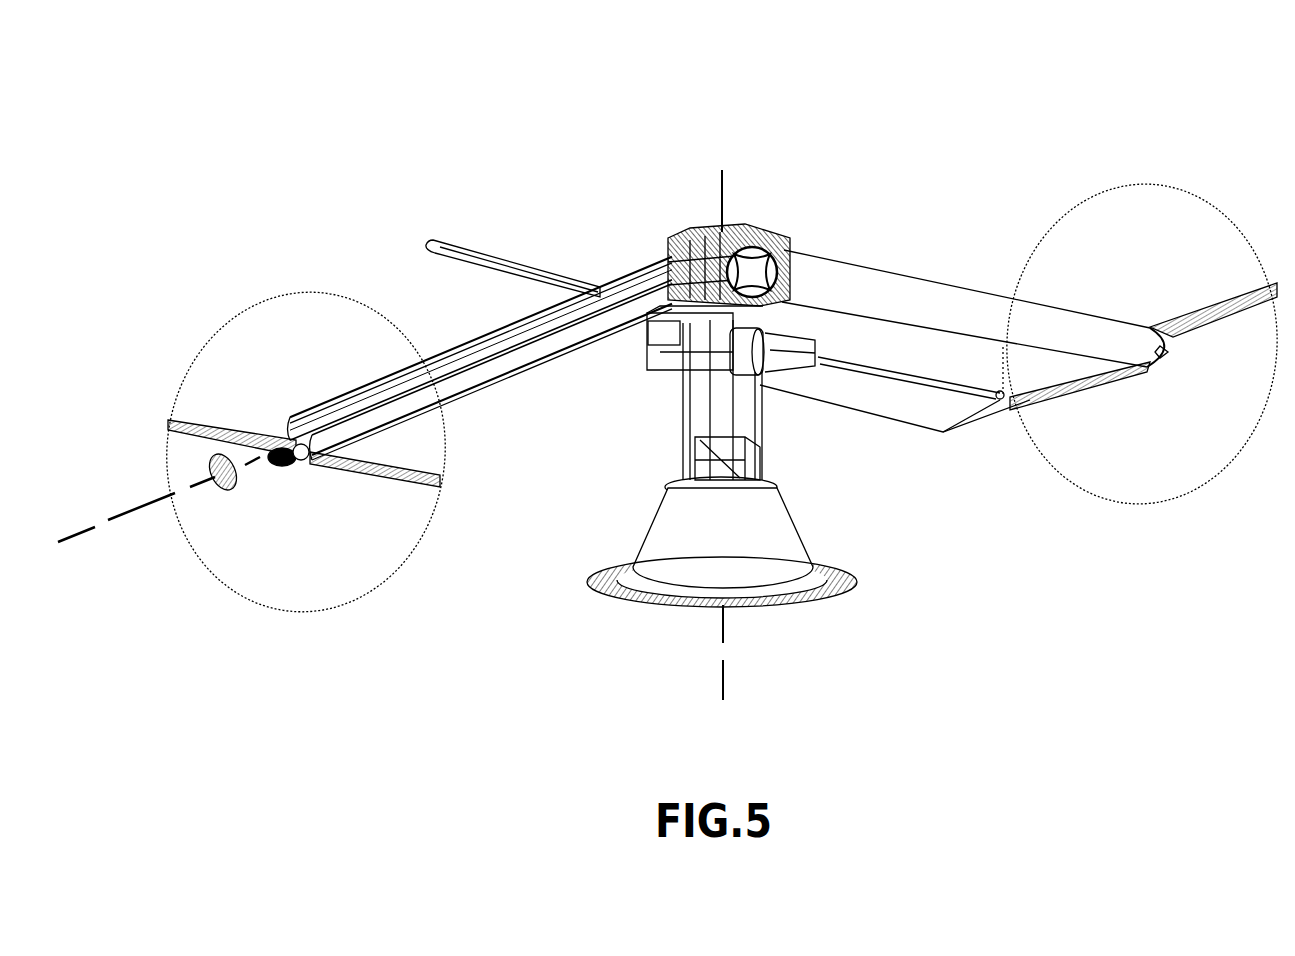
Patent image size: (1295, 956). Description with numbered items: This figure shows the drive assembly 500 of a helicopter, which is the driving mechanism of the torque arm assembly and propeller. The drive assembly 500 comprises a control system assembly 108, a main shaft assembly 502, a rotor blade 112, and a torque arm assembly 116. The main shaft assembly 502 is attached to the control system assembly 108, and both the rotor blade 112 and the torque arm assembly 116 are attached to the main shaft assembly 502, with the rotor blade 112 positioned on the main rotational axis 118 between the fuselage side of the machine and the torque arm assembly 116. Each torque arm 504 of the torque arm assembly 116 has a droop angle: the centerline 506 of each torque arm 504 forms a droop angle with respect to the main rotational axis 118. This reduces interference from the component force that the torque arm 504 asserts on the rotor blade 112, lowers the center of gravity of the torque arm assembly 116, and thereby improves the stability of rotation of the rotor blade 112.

The drive assembly 500 is at (245, 115).
The main rotational axis 118 is at (722, 150).
The torque arm 504 is at (873, 266).
The torque arm assembly 116 is at (938, 270).
The centerline 506 is at (112, 535).
The main shaft assembly 502 is at (703, 397).
The control system assembly 108 is at (762, 465).
The rotor blade 112 is at (943, 432).